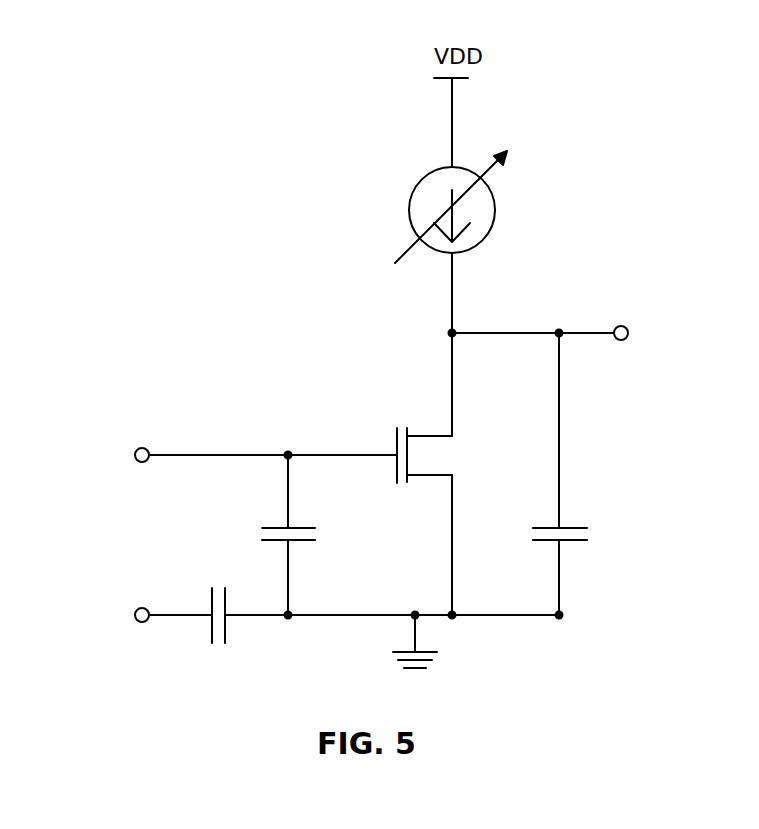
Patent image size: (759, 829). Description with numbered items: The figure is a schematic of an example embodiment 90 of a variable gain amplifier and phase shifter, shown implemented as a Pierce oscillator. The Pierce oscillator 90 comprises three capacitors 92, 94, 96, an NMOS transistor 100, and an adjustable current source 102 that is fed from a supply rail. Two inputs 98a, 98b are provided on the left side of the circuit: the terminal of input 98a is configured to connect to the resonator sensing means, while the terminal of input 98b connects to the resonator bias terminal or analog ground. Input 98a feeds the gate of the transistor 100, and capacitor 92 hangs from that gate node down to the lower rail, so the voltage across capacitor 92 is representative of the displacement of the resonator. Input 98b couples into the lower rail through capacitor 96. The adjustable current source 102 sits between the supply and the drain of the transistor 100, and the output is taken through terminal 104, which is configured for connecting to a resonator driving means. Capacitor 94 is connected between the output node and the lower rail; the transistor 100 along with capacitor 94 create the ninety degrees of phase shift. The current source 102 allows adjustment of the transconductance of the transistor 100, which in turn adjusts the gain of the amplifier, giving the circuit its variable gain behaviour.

The Pierce oscillator 90 is at (165, 116).
The capacitor 92 is at (276, 524).
The capacitor 94 is at (578, 524).
The capacitor 96 is at (210, 630).
The input 98a is at (136, 446).
The input 98b is at (136, 607).
The NMOS transistor 100 is at (396, 442).
The adjustable current source 102 is at (415, 183).
The output terminal 104 is at (624, 325).